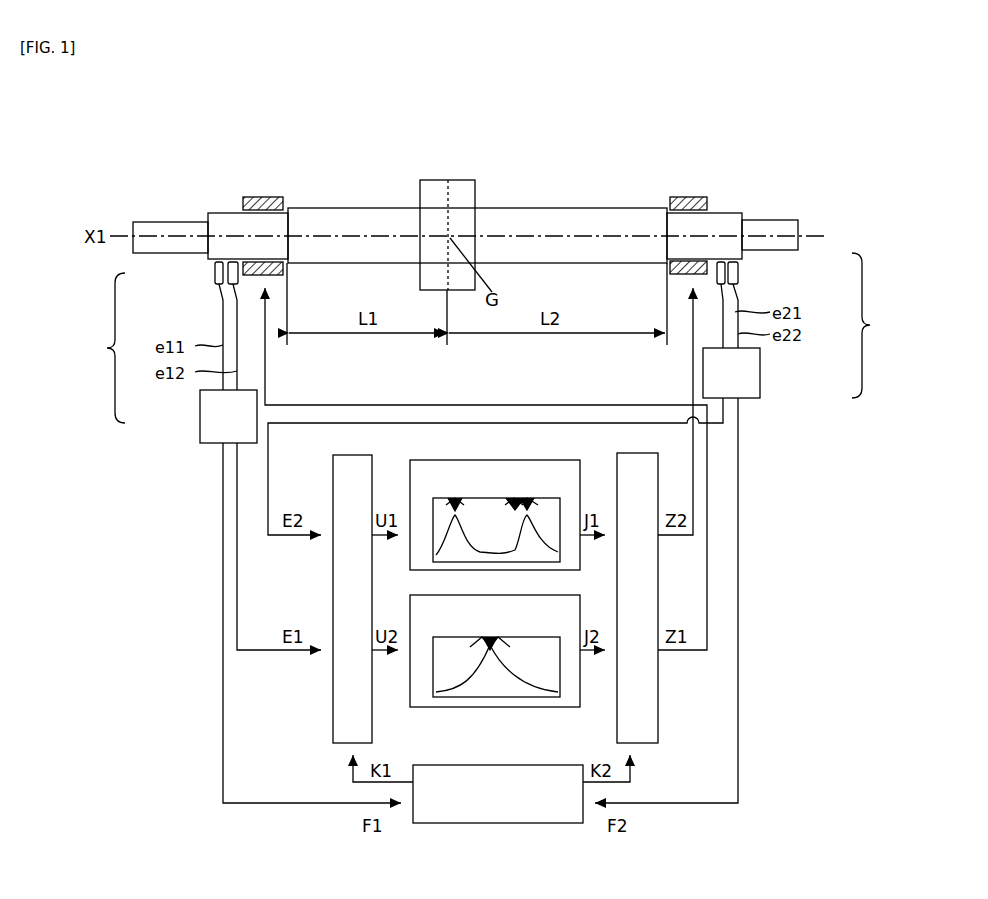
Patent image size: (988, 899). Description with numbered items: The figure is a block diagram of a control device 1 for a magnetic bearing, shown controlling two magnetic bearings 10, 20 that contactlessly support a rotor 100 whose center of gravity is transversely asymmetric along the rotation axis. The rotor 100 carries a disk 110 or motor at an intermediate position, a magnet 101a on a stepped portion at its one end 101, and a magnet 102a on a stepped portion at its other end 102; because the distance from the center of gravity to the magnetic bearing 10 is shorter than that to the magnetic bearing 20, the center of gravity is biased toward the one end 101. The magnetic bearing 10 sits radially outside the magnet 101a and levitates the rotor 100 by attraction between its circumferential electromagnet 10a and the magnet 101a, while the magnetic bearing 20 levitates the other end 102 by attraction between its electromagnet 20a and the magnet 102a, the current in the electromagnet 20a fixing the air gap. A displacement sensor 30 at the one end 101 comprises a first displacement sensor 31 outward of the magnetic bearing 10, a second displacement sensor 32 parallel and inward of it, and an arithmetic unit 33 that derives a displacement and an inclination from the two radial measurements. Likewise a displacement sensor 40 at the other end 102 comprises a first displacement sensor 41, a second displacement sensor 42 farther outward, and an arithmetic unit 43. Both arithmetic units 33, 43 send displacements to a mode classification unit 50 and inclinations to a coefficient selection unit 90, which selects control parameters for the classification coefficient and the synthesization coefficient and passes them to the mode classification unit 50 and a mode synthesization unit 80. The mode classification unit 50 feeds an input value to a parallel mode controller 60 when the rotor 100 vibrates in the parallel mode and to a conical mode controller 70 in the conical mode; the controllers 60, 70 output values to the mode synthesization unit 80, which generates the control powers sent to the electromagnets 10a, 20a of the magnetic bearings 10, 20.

The control device for a magnetic bearing 1 is at (778, 120).
The magnetic bearing 10 is at (284, 194).
The electromagnet 10a is at (258, 196).
The magnetic bearing 20 is at (680, 194).
The electromagnet 20a is at (690, 196).
The displacement sensor 30 is at (98, 348).
The first displacement sensor 31 is at (213, 275).
The second displacement sensor 32 is at (220, 297).
The arithmetic unit 33 is at (200, 415).
The displacement sensor 40 is at (876, 325).
The first displacement sensor 41 is at (738, 290).
The second displacement sensor 42 is at (738, 268).
The arithmetic unit 43 is at (760, 384).
The mode classification unit 50 is at (333, 485).
The parallel mode controller 60 is at (495, 515).
The conical mode controller 70 is at (495, 651).
The mode synthesization unit 80 is at (658, 485).
The coefficient selection unit 90 is at (497, 824).
The rotor 100 is at (556, 206).
The one end 101 is at (147, 222).
The magnet 101a is at (220, 228).
The other end 102 is at (775, 226).
The magnet 102a is at (722, 228).
The disk 110 is at (450, 180).